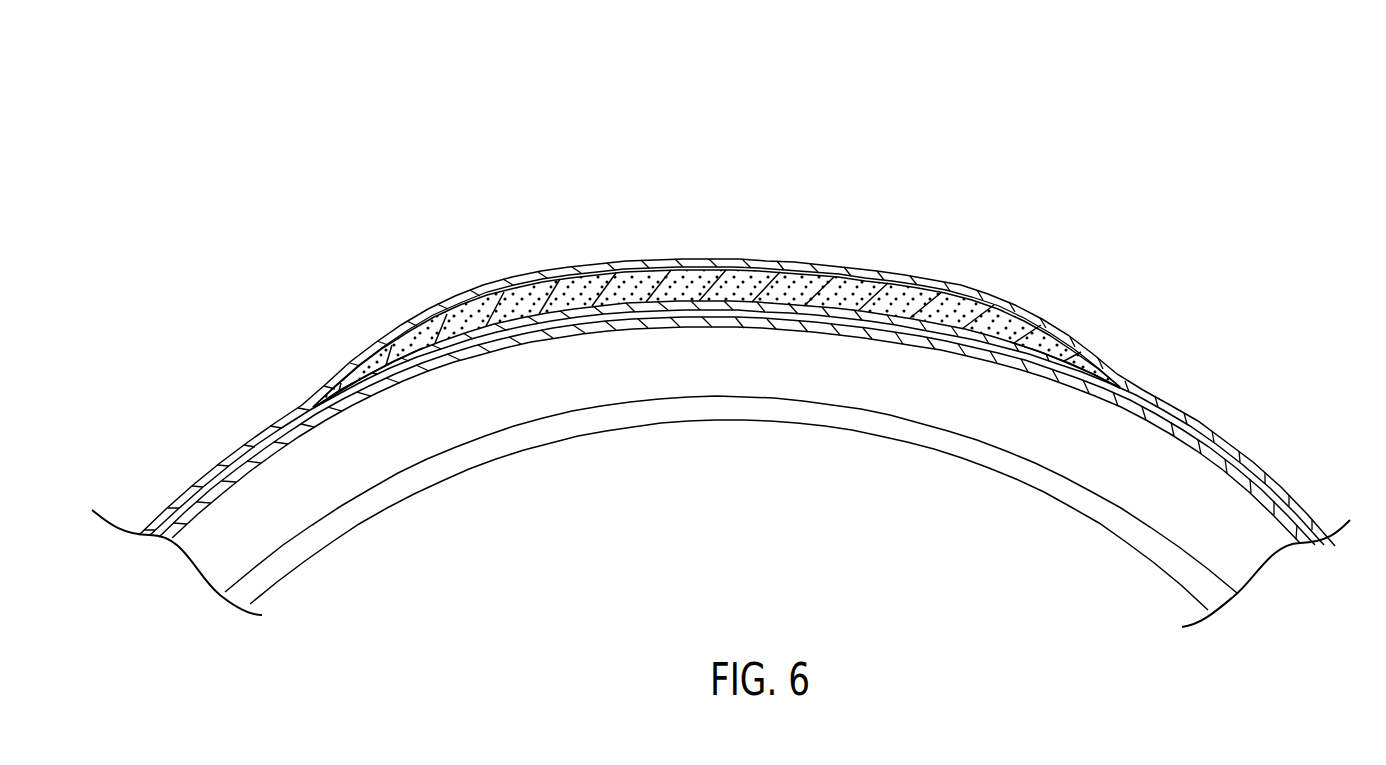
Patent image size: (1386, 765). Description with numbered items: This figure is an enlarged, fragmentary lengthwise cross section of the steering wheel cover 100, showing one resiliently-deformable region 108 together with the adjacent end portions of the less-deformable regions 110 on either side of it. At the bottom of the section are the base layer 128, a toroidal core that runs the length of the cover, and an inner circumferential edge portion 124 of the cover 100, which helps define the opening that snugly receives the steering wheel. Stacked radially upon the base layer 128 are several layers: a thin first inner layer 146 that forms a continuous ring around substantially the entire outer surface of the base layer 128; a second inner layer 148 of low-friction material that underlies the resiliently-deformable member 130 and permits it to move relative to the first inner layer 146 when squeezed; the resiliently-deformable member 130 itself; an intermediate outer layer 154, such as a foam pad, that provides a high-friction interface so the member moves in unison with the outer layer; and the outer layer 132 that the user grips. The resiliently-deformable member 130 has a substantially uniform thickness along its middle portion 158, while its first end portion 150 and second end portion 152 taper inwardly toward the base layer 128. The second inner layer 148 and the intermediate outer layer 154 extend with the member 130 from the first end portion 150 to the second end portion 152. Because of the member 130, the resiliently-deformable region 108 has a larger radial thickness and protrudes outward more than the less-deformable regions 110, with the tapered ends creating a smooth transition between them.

The steering wheel cover 100 is at (1250, 132).
The resiliently-deformable region 108 is at (842, 202).
The less-deformable region 110 is at (216, 410).
The inner circumferential edge portion 124 is at (577, 423).
The base layer 128 is at (730, 312).
The resiliently-deformable member 130 is at (925, 300).
The outer layer 132 is at (790, 258).
The first inner layer 146 is at (920, 325).
The second inner layer 148 is at (626, 303).
The first end portion 150 is at (400, 345).
The second end portion 152 is at (1088, 367).
The intermediate outer layer 154 is at (885, 277).
The middle portion 158 is at (712, 280).